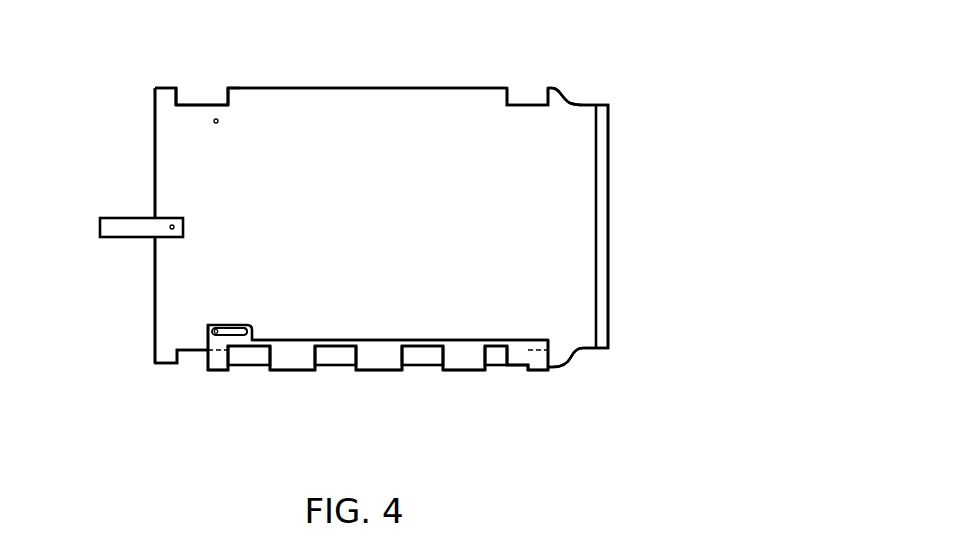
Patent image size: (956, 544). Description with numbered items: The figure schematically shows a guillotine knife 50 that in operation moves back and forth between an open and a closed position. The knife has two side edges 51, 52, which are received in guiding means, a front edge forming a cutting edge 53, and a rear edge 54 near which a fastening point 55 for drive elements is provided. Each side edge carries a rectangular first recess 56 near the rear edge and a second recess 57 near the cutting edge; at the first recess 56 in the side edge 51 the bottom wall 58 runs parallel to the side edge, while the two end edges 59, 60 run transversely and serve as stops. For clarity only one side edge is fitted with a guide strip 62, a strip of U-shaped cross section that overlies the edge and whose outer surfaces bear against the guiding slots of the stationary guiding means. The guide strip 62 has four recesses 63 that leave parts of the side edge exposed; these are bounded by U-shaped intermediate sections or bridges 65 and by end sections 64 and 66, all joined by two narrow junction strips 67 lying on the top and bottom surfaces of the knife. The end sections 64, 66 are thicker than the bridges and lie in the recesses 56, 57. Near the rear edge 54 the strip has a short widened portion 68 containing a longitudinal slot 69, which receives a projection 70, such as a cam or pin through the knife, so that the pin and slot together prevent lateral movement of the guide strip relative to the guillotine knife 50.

The guillotine knife 50 is at (371, 206).
The side edge 51 is at (380, 87).
The side edge 52 is at (432, 365).
The cutting edge 53 is at (608, 200).
The rear edge 54 is at (153, 302).
The fastening point 55 is at (174, 226).
The first recess 56 is at (198, 90).
The second recess 57 is at (530, 90).
The bottom wall 58 is at (213, 102).
The end edge 59 is at (231, 93).
The end edge 60 is at (186, 88).
The guide strip 62 is at (402, 329).
The recess 63 is at (325, 340).
The end section 64 is at (222, 370).
The intermediate section 65 is at (370, 370).
The end section 66 is at (543, 370).
The junction strip 67 is at (373, 340).
The widened portion 68 is at (228, 328).
The slot 69 is at (237, 332).
The projection 70 is at (213, 121).